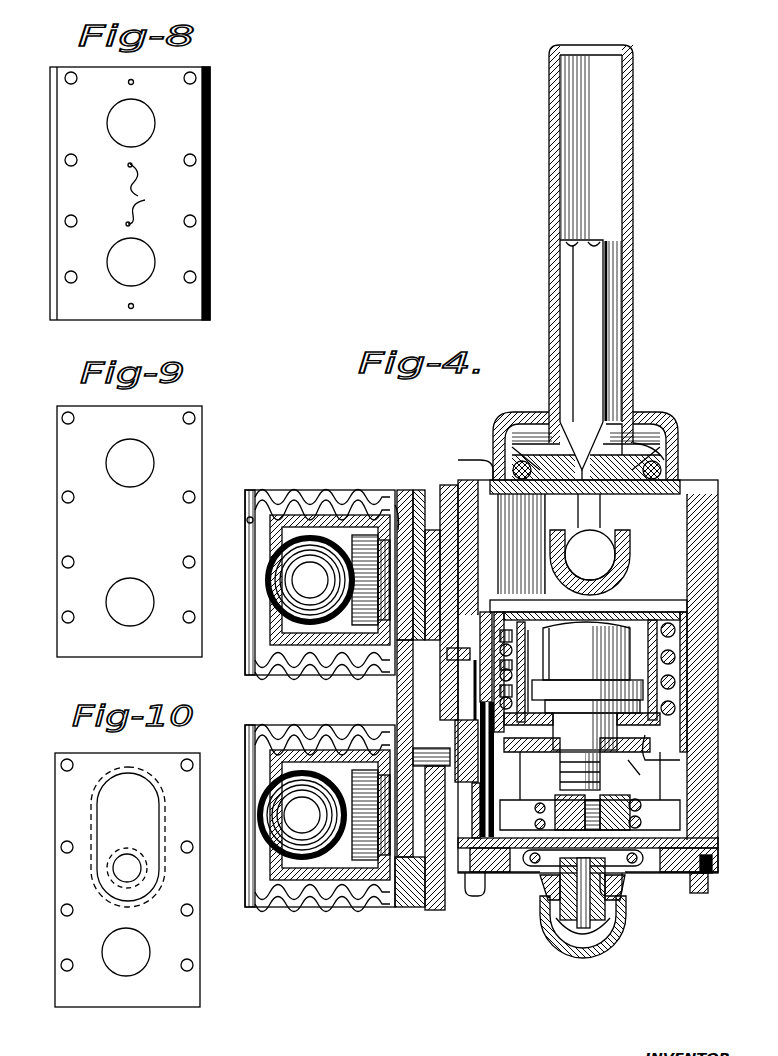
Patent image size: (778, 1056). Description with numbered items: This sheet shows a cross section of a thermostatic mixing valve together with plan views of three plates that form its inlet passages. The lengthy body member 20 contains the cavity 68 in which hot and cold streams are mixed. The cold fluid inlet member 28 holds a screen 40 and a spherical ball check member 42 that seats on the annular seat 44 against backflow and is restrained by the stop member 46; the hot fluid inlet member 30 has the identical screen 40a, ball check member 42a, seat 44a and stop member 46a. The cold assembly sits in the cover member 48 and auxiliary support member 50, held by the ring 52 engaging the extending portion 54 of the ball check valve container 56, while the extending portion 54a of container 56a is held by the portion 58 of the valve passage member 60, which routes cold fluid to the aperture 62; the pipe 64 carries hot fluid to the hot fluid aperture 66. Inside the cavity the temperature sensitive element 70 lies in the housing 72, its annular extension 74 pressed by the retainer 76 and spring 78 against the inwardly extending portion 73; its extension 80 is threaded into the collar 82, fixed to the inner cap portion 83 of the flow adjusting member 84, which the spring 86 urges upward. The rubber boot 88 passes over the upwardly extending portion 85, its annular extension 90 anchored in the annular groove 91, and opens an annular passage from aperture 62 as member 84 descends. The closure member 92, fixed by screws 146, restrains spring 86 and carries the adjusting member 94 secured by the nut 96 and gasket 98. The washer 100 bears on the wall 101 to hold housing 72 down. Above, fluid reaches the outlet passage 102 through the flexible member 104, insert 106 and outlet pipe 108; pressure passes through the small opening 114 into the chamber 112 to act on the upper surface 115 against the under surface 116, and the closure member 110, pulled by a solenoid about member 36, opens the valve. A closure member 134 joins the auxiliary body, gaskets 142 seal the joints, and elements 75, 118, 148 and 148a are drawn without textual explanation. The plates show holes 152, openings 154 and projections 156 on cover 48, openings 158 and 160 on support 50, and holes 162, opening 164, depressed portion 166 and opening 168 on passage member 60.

In FIG. 4, the lengthy body member 20 is at (718, 530).
In FIG. 4, the cold fluid inlet member 28 is at (280, 528).
In FIG. 4, the hot fluid inlet member 30 is at (270, 912).
In FIG. 4, the control element member 36 is at (634, 150).
In FIG. 4, the screen 40 is at (248, 510).
In FIG. 4, the screen 40a is at (248, 772).
In FIG. 4, the ball check member 42 is at (330, 535).
In FIG. 4, the ball check member 42a is at (305, 775).
In FIG. 4, the annular seat 44 is at (306, 530).
In FIG. 4, the annular seat 44a is at (300, 770).
In FIG. 4, the stop member 46 is at (380, 540).
In FIG. 4, the stop member 46a is at (382, 775).
In FIG. 8, the cover member 48 is at (195, 116).
In FIG. 4, the cover member 48 is at (405, 490).
In FIG. 9, the auxiliary support member 50 is at (155, 434).
In FIG. 4, the auxiliary support member 50 is at (420, 490).
In FIG. 4, the ring 52 is at (432, 530).
In FIG. 4, the extending portion 54 is at (450, 485).
In FIG. 4, the extending portion 54a is at (430, 907).
In FIG. 4, the ball check valve container 56 is at (360, 535).
In FIG. 4, the ball check valve containing member 56a is at (345, 770).
In FIG. 4, the portion of valve passage member 58 is at (410, 907).
In FIG. 10, the valve passage member 60 is at (106, 994).
In FIG. 4, the valve passage member 60 is at (447, 721).
In FIG. 4, the aperture 62 is at (447, 652).
In FIG. 4, the pipe 64 is at (440, 910).
In FIG. 4, the hot fluid aperture 66 is at (720, 840).
In FIG. 4, the cavity 68 is at (690, 488).
In FIG. 4, the temperature sensitive element 70 is at (590, 665).
In FIG. 4, the housing 72 is at (665, 700).
In FIG. 4, the inwardly extending portion 73 is at (654, 766).
In FIG. 4, the annular extension 74 is at (599, 744).
In FIG. 4, the spring 75 is at (690, 676).
In FIG. 4, the retainer 76 is at (675, 728).
In FIG. 4, the spring 78 is at (680, 688).
In FIG. 4, the extension 80 is at (612, 787).
In FIG. 4, the collar 82 is at (690, 816).
In FIG. 4, the inner cap portion 83 is at (647, 812).
In FIG. 4, the flow adjusting member 84 is at (690, 797).
In FIG. 4, the upwardly extending portion 85 is at (690, 742).
In FIG. 4, the spring 86 is at (640, 890).
In FIG. 4, the rubber boot 88 is at (690, 716).
In FIG. 4, the annular extension 90 is at (680, 778).
In FIG. 4, the annular groove 91 is at (700, 760).
In FIG. 4, the closure member 92 is at (545, 880).
In FIG. 4, the adjusting member 94 is at (618, 925).
In FIG. 4, the nut 96 is at (582, 955).
In FIG. 4, the gasket 98 is at (573, 910).
In FIG. 4, the washer 100 is at (660, 606).
In FIG. 4, the wall 101 is at (690, 612).
In FIG. 4, the outlet passage 102 is at (672, 478).
In FIG. 4, the flexible member 104 is at (662, 455).
In FIG. 4, the insert 106 is at (590, 555).
In FIG. 4, the outlet pipe 108 is at (512, 415).
In FIG. 4, the closure member 110 is at (592, 330).
In FIG. 4, the chamber 112 is at (625, 460).
In FIG. 4, the small opening 114 is at (548, 430).
In FIG. 4, the upper surface 115 is at (628, 440).
In FIG. 4, the under surface 116 is at (662, 470).
In FIG. 4, the valve seat 118 is at (628, 578).
In FIG. 4, the closure member 134 is at (648, 412).
In FIG. 4, the gaskets 142 is at (740, 892).
In FIG. 4, the screws 146 is at (700, 895).
In FIG. 4, the bellows 148 is at (262, 495).
In FIG. 4, the bellows 148a is at (262, 912).
In FIG. 8, the holes 152 is at (196, 72).
In FIG. 8, the openings 154 is at (122, 100).
In FIG. 8, the projections 156 is at (152, 194).
In FIG. 4, the projections 156 is at (395, 505).
In FIG. 9, the openings 158 is at (62, 418).
In FIG. 4, the openings 158 is at (248, 520).
In FIG. 9, the openings 160 is at (108, 462).
In FIG. 10, the holes 162 is at (62, 910).
In FIG. 10, the opening 164 is at (131, 976).
In FIG. 10, the depressed portion 166 is at (140, 798).
In FIG. 4, the depressed portion 166 is at (470, 470).
In FIG. 10, the opening 168 is at (140, 880).